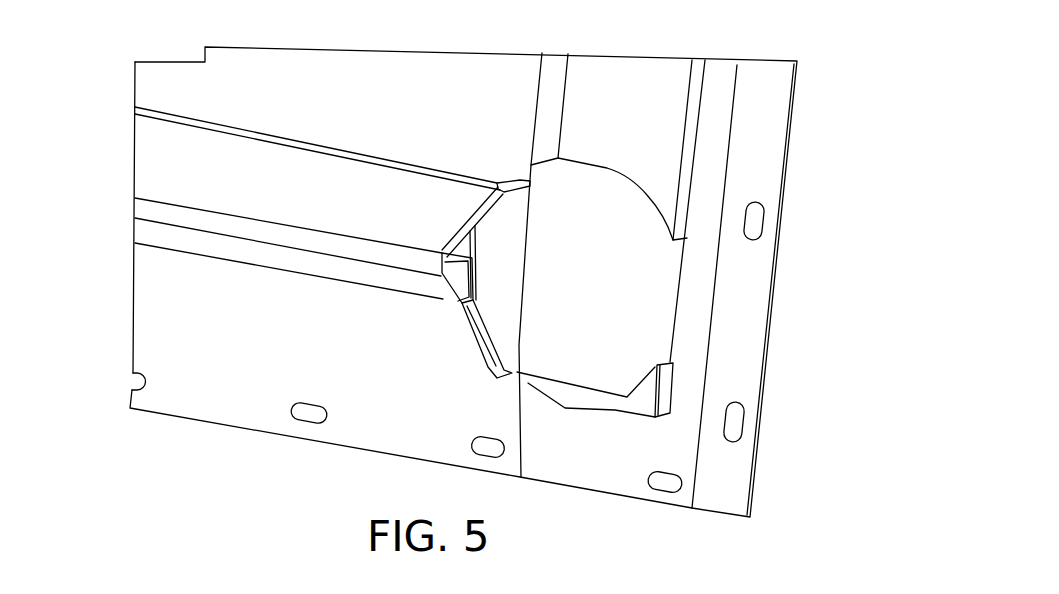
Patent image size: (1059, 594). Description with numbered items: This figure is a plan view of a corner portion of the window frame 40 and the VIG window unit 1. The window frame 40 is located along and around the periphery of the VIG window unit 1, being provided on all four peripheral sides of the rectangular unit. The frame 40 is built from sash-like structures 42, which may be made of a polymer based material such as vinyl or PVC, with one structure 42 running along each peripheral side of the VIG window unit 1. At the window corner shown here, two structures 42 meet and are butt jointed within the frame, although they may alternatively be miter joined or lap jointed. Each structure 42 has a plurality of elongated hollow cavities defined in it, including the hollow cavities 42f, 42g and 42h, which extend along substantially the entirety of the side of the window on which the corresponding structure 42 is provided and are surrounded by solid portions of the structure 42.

The VIG window unit 1 is at (207, 83).
The window frame 40 is at (182, 474).
The structure 42 is at (182, 194).
The elongated hollow cavity 42f is at (462, 238).
The elongated hollow cavity 42g is at (458, 273).
The elongated hollow cavity 42h is at (472, 325).